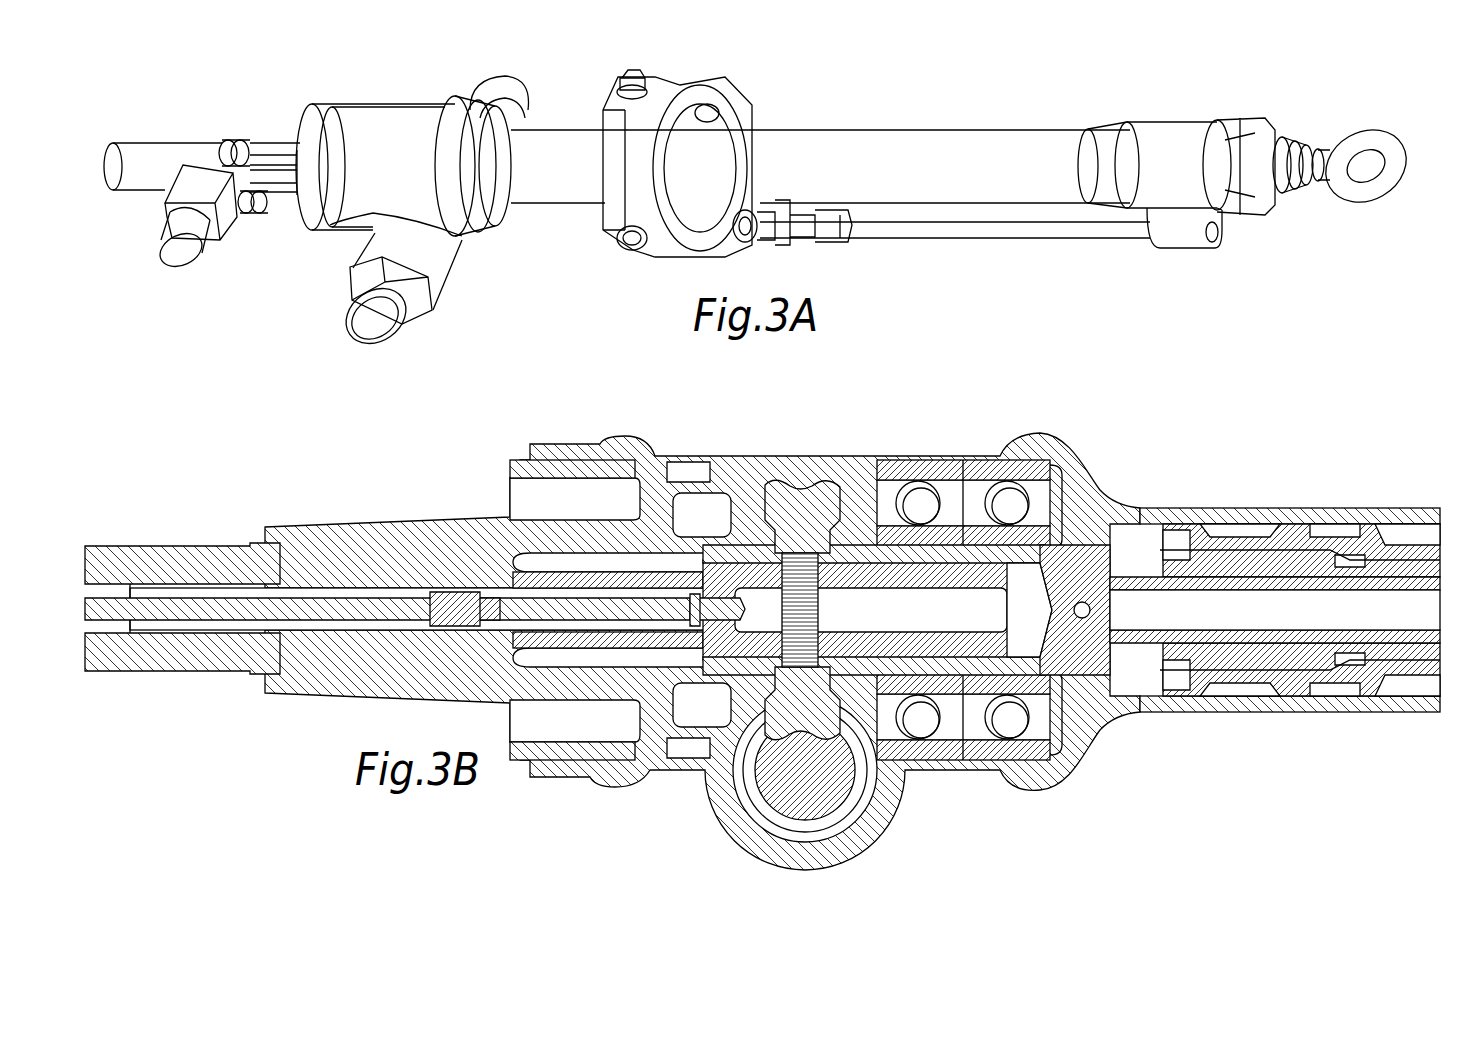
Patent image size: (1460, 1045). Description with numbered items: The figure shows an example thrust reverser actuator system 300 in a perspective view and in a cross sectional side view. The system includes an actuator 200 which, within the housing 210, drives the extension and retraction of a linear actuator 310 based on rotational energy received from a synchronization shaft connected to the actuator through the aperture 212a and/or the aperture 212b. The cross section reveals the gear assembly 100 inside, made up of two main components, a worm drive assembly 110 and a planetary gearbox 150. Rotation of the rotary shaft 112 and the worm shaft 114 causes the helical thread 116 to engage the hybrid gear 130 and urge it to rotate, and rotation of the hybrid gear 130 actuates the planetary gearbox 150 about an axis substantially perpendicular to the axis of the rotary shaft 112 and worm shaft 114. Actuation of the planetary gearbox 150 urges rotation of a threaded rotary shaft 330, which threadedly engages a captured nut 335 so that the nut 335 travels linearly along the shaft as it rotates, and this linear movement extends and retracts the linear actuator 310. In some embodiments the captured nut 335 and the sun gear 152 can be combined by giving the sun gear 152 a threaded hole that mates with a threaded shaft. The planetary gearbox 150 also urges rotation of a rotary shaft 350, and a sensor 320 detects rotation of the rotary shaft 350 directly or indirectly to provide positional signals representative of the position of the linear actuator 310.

In FIG. 3B, the gear assembly 100 is at (440, 514).
In FIG. 3B, the worm drive assembly 110 is at (748, 830).
In FIG. 3B, the rotary shaft 112 is at (890, 816).
In FIG. 3B, the worm shaft 114 is at (866, 838).
In FIG. 3B, the helical thread 116 is at (878, 786).
In FIG. 3B, the hybrid gear 130 is at (762, 497).
In FIG. 3B, the planetary gearbox 150 is at (806, 466).
In FIG. 3B, the sun gear 152 is at (845, 602).
In FIG. 3B, the actuator 200 is at (678, 802).
In FIG. 3A, the housing 210 is at (340, 196).
In FIG. 3A, the aperture 212a is at (366, 342).
In FIG. 3A, the aperture 212b is at (522, 75).
In FIG. 3A, the thrust reverser actuator system 300 is at (275, 66).
In FIG. 3A, the linear actuator 310 is at (1352, 140).
In FIG. 3B, the linear actuator 310 is at (1390, 538).
In FIG. 3A, the sensor 320 is at (157, 143).
In FIG. 3B, the sensor 320 is at (157, 540).
In FIG. 3B, the rotary shaft 330 is at (1096, 555).
In FIG. 3B, the captured nut 335 is at (1418, 655).
In FIG. 3B, the rotary shaft 350 is at (588, 597).